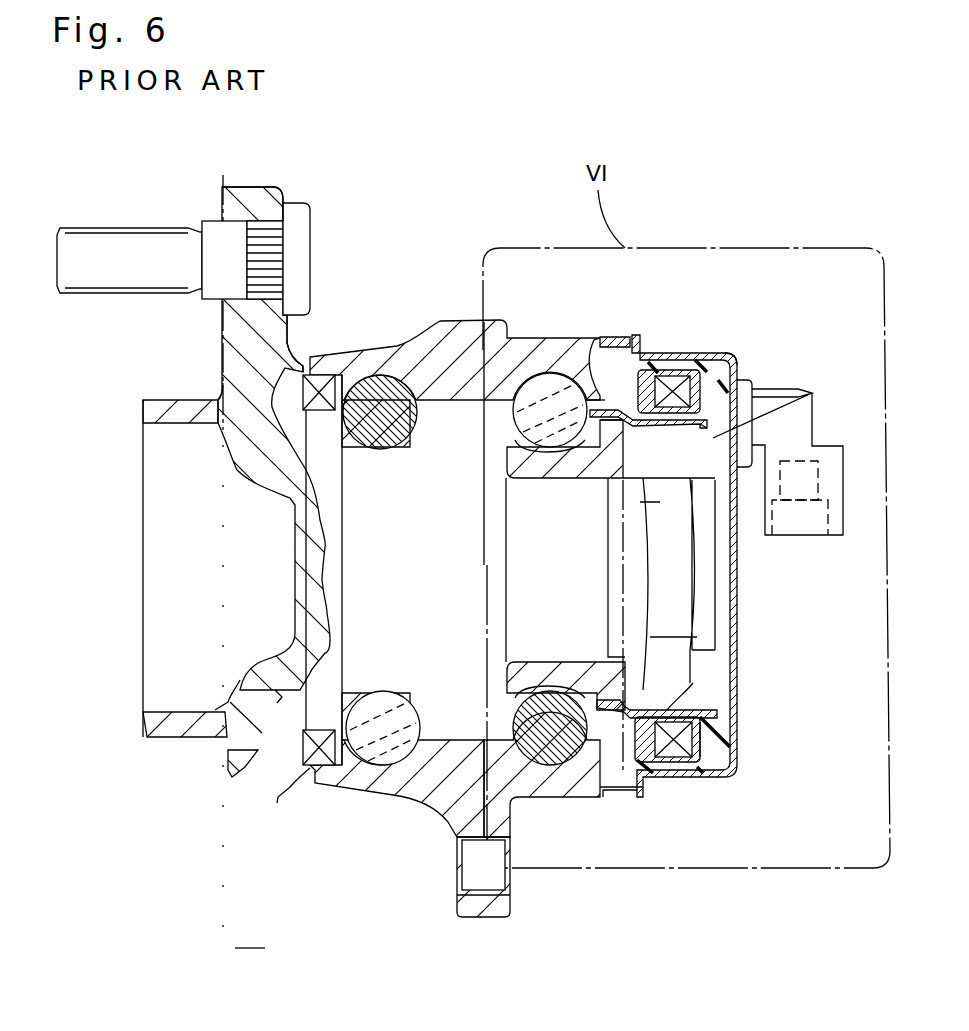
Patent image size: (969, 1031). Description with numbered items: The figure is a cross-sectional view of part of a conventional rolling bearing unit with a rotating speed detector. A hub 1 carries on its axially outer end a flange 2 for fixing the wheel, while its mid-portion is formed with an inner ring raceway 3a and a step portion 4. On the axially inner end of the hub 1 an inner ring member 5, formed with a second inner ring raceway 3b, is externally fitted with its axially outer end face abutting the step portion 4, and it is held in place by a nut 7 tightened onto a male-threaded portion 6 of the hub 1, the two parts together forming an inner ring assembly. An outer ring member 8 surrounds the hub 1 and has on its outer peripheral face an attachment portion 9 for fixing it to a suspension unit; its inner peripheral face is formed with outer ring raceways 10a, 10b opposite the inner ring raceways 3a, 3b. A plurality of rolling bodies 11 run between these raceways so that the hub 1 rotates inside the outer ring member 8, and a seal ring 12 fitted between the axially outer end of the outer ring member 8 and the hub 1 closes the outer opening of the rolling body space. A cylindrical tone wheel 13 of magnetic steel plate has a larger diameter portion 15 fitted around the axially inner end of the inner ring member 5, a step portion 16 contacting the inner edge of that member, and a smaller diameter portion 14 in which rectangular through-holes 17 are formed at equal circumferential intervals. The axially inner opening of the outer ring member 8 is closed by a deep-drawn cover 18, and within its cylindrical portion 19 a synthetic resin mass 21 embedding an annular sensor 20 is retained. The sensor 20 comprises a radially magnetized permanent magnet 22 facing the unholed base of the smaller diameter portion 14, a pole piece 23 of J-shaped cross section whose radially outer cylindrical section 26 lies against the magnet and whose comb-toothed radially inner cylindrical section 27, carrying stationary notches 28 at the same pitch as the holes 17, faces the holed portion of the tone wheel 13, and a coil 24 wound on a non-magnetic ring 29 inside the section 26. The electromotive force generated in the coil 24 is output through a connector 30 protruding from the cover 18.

The hub 1 is at (365, 573).
The flange 2 is at (233, 367).
The inner ring raceway 3a is at (363, 703).
The inner ring raceway 3b is at (577, 427).
The step portion 4 is at (482, 450).
The inner ring member 5 is at (610, 430).
The male-threaded portion 6 is at (620, 577).
The nut 7 is at (683, 567).
The outer ring member 8 is at (553, 365).
The attachment portion 9 is at (483, 910).
The outer ring raceway 10a is at (388, 762).
The outer ring raceway 10b is at (552, 767).
The rolling bodies 11 is at (356, 380).
The seal ring 12 is at (318, 372).
The tone wheel 13 is at (678, 703).
The smaller diameter portion 14 is at (693, 685).
The larger diameter portion 15 is at (600, 787).
The step portion 16 is at (587, 408).
The through-holes 17 is at (812, 393).
The cover 18 is at (740, 633).
The cylindrical portion 19 is at (708, 355).
The sensor 20 is at (673, 772).
The synthetic resin mass 21 is at (727, 382).
The permanent magnet 22 is at (614, 398).
The pole piece 23 is at (713, 772).
The coil 24 is at (738, 360).
The radially outer cylindrical section 26 is at (668, 372).
The radially inner cylindrical section 27 is at (737, 727).
The stationary notches 28 is at (685, 415).
The non-magnetic ring 29 is at (703, 743).
The connector 30 is at (790, 433).